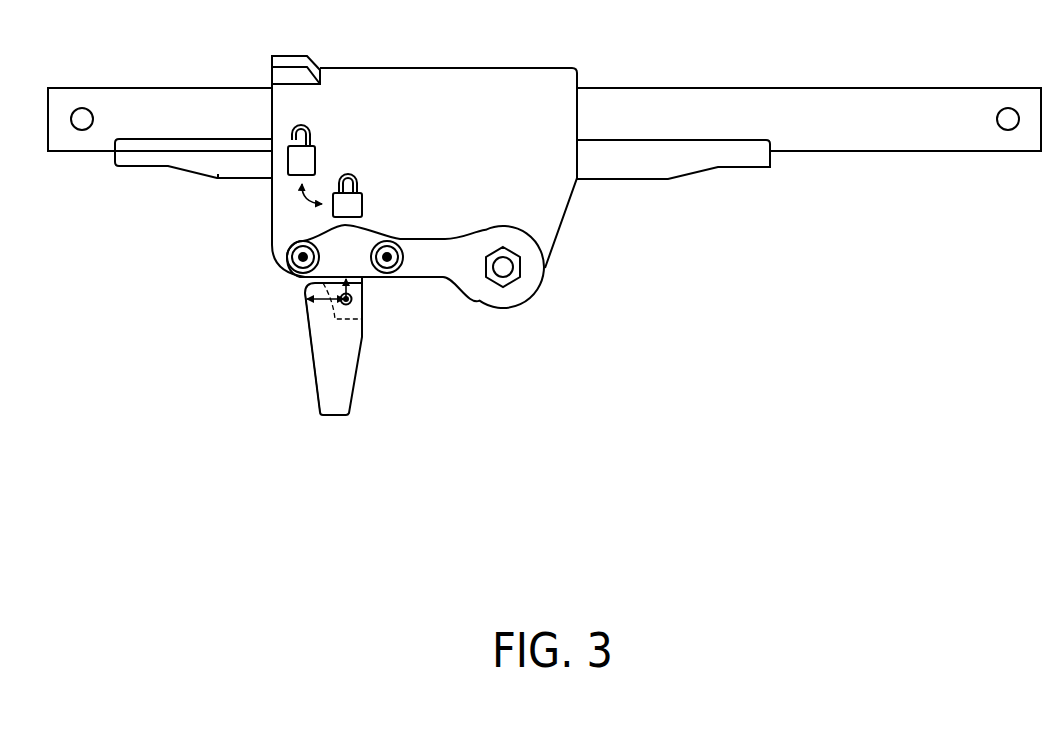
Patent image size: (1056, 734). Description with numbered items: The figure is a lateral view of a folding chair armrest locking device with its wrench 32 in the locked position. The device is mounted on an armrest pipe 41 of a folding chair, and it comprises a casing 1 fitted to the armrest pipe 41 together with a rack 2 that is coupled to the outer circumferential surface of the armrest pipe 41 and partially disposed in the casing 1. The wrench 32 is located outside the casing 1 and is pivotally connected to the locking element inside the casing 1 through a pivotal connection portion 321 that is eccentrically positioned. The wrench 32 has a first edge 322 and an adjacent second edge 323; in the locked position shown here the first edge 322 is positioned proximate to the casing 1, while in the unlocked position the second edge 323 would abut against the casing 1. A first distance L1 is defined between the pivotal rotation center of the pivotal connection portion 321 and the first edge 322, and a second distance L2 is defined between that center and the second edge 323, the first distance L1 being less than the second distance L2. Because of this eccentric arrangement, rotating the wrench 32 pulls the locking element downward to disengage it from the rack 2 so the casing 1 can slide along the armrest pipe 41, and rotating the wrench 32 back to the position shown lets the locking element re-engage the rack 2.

The casing 1 is at (410, 88).
The armrest pipe 41 is at (725, 98).
The rack 2 is at (653, 161).
The wrench 32 is at (330, 373).
The pivotal connection portion 321 is at (348, 305).
The first edge 322 is at (290, 263).
The second edge 323 is at (307, 335).
The first distance L1 is at (355, 283).
The second distance L2 is at (308, 305).